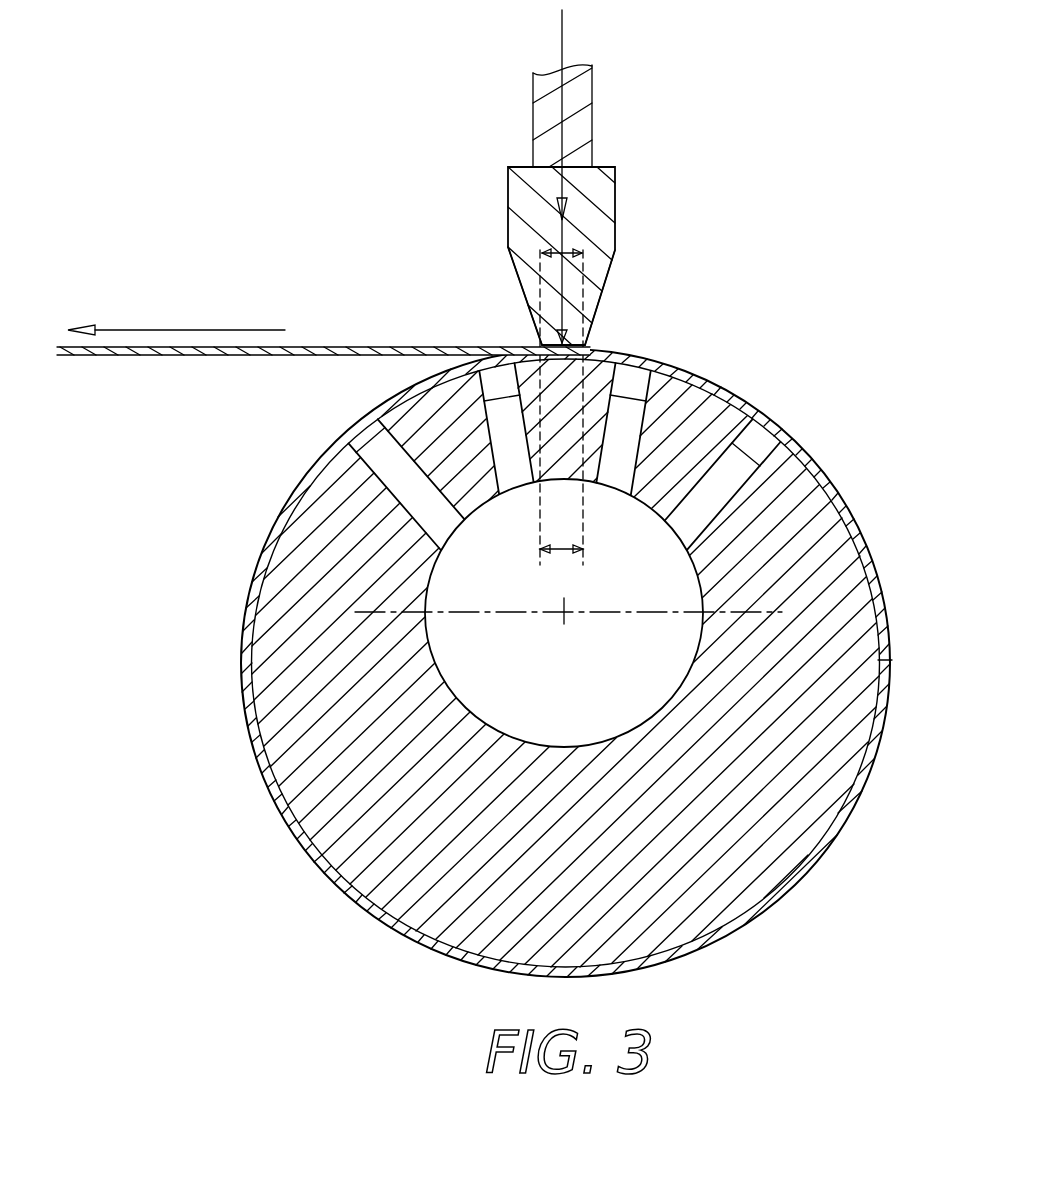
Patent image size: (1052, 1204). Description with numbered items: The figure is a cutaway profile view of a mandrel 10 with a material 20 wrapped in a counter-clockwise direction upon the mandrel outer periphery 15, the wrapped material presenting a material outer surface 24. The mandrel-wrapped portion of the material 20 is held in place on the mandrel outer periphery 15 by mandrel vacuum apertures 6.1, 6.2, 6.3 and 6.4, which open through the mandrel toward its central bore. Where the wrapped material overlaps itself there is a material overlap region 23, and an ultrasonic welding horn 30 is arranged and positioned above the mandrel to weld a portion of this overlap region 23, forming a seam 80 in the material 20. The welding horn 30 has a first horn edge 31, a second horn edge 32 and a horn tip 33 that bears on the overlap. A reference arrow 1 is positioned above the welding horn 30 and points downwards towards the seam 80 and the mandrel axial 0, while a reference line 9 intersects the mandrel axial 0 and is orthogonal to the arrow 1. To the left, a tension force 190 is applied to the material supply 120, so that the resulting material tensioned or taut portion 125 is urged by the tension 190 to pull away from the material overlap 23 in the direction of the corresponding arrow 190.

The reference arrow 1 is at (560, 42).
The ultrasonic welding horn 30 is at (518, 196).
The seam 80 is at (565, 253).
The horn tip 33 is at (605, 281).
The second horn edge 32 is at (542, 344).
The first horn edge 31 is at (585, 345).
The tension force 190 is at (178, 330).
The material tensioned portion 125 is at (530, 347).
The material supply 120 is at (142, 372).
The mandrel vacuum aperture 6.1 is at (378, 441).
The mandrel vacuum aperture 6.2 is at (490, 392).
The mandrel vacuum aperture 6.3 is at (640, 388).
The mandrel vacuum aperture 6.4 is at (760, 448).
The reference line 9 is at (770, 612).
The material overlap region 23 is at (562, 552).
The mandrel axial 0 is at (563, 618).
The material outer surface 24 is at (892, 660).
The mandrel outer periphery 15 is at (862, 676).
The mandrel 10 is at (782, 866).
The material 20 is at (222, 652).